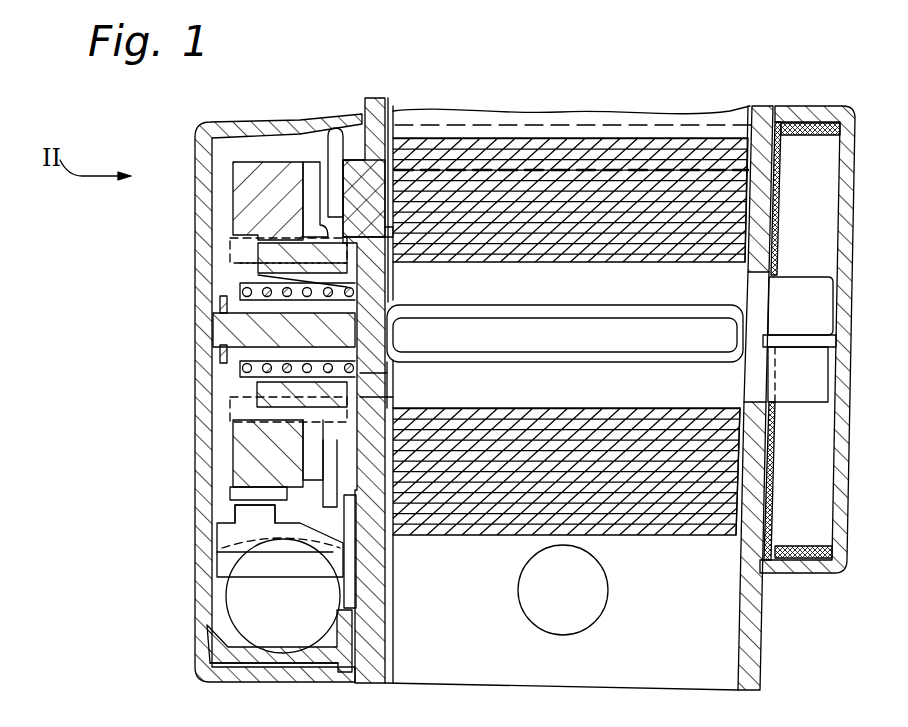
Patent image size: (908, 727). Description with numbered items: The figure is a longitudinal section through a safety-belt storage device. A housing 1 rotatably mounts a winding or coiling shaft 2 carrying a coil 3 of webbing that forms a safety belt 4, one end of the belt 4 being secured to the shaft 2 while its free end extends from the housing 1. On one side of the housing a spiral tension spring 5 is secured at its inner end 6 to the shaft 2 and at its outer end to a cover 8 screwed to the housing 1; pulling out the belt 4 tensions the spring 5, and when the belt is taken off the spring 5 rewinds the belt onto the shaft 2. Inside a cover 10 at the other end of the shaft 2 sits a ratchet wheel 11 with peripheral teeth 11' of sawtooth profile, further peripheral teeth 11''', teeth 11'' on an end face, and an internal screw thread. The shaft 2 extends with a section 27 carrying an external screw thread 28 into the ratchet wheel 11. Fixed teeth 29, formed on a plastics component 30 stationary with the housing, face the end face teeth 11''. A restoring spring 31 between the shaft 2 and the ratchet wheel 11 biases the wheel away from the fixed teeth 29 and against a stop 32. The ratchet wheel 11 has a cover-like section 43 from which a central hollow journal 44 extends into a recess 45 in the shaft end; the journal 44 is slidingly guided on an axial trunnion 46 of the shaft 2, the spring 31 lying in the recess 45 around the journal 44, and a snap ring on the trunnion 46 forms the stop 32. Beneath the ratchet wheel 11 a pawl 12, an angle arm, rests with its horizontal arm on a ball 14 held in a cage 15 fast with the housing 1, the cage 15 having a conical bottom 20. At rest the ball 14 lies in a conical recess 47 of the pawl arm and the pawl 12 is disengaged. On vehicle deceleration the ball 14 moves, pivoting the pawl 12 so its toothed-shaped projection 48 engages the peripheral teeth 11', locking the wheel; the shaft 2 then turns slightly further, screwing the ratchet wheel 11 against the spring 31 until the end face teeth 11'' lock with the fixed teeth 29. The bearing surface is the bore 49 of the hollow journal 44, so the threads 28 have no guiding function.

The housing 1 is at (360, 685).
The winding or coiling shaft 2 is at (820, 295).
The coil 3 is at (663, 522).
The safety belt 4 is at (613, 120).
The spiral tension spring 5 is at (830, 187).
The inner end 6 is at (802, 346).
The cover 8 is at (840, 448).
The cover 10 is at (210, 483).
The ratchet wheel 11 is at (225, 460).
The peripheral teeth 11' is at (250, 158).
The end face teeth 11'' is at (288, 157).
The peripheral teeth 11''' is at (232, 236).
The detent or pawl 12 is at (232, 534).
The ball 14 is at (240, 596).
The cage 15 is at (220, 660).
The conical bottom 20 is at (300, 643).
The section 27 is at (245, 390).
The external screw thread 28 is at (360, 397).
The fixed teeth 29 is at (335, 138).
The component 30 is at (347, 497).
The restoring spring 31 is at (362, 283).
The stop 32 is at (225, 355).
The cover-like section 43 is at (225, 268).
The central hollow journal 44 is at (362, 332).
The recess 45 is at (362, 373).
The axial trunnion 46 is at (225, 328).
The conical recess 47 is at (354, 560).
The toothed-shaped projection 48 is at (230, 512).
The bore 49 is at (224, 308).